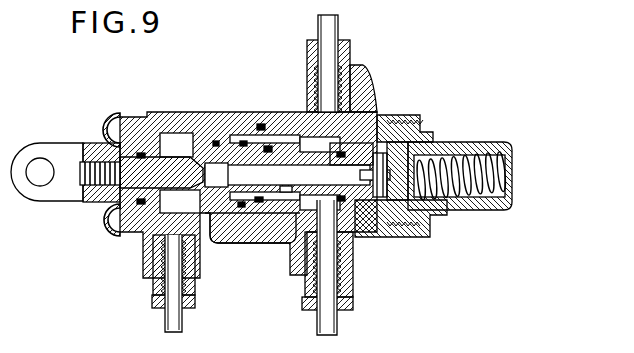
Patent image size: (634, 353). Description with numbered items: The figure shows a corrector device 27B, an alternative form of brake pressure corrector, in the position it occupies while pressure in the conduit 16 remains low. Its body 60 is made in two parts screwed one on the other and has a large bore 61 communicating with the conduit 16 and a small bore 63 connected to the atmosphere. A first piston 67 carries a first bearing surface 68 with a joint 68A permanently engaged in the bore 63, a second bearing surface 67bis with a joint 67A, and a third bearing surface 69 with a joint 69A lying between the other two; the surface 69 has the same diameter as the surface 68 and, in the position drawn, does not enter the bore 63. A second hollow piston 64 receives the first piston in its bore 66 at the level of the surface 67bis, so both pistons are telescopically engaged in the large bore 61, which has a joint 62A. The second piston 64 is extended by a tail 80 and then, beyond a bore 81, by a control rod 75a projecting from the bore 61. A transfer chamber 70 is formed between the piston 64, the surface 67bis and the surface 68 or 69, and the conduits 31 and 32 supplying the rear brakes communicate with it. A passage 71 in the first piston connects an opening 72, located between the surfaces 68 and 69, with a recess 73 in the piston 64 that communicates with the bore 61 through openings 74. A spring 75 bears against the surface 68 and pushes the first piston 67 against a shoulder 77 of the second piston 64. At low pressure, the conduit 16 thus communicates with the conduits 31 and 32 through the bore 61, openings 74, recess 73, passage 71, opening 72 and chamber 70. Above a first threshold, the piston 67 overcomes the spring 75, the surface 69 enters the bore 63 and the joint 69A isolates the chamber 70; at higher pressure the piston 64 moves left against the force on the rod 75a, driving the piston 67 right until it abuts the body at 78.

The conduit 16 is at (165, 320).
The corrector device 27B is at (140, 237).
The conduit 31 is at (334, 31).
The conduit 32 is at (330, 323).
The body 60 is at (188, 112).
The large bore 61 is at (200, 233).
The joint 62A is at (258, 197).
The small bore 63 is at (470, 205).
The second hollow piston 64 is at (237, 143).
The bore 66 is at (268, 150).
The first piston 67 is at (287, 190).
The joint 67A is at (248, 147).
The second bearing surface 67bis is at (258, 198).
The first bearing surface 68 is at (400, 207).
The joint 68A is at (422, 122).
The third bearing surface 69 is at (337, 197).
The joint 69A is at (378, 122).
The transfer chamber 70 is at (343, 130).
The passage 71 is at (303, 172).
The opening 72 is at (372, 200).
The recess 73 is at (226, 184).
The openings 74 is at (216, 215).
The spring 75 is at (496, 157).
The control rod 75a is at (62, 153).
The shoulder 77 is at (210, 148).
The abutment 78 is at (338, 197).
The tail 80 is at (173, 163).
The bore 81 is at (122, 116).